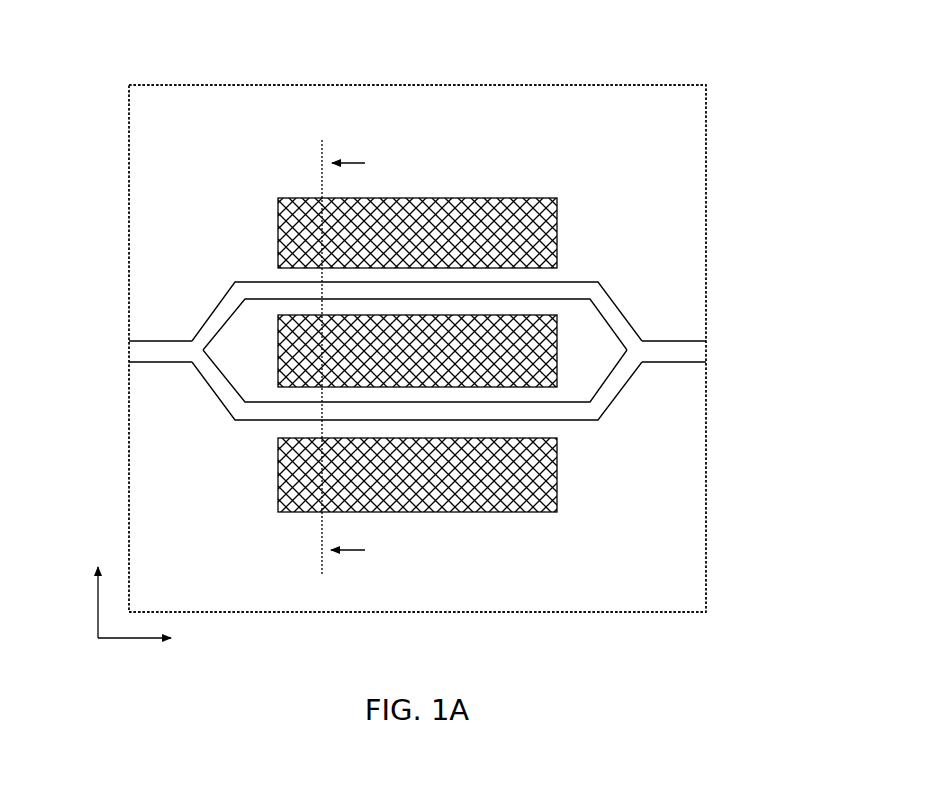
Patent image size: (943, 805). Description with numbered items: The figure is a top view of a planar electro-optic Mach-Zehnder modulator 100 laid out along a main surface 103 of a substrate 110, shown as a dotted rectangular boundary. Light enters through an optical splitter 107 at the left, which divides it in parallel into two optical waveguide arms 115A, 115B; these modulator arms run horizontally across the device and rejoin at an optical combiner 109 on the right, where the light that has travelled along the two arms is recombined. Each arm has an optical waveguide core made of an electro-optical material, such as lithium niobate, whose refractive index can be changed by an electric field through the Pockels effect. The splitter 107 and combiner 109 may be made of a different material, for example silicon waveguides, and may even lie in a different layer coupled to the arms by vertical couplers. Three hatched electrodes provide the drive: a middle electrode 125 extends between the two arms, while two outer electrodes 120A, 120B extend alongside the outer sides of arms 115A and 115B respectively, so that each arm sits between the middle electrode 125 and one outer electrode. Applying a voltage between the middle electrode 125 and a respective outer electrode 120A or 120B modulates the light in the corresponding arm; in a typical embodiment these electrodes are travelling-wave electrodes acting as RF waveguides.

The planar electro-optic Mach-Zehnder modulator 100 is at (494, 58).
The main surface 103 is at (691, 100).
The substrate 110 is at (198, 128).
The optical splitter 107 is at (183, 324).
The optical combiner 109 is at (645, 324).
The first optical waveguide arm 115A is at (248, 278).
The second optical waveguide arm 115B is at (242, 422).
The first outer electrode 120A is at (389, 247).
The second outer electrode 120B is at (389, 490).
The middle electrode 125 is at (394, 364).